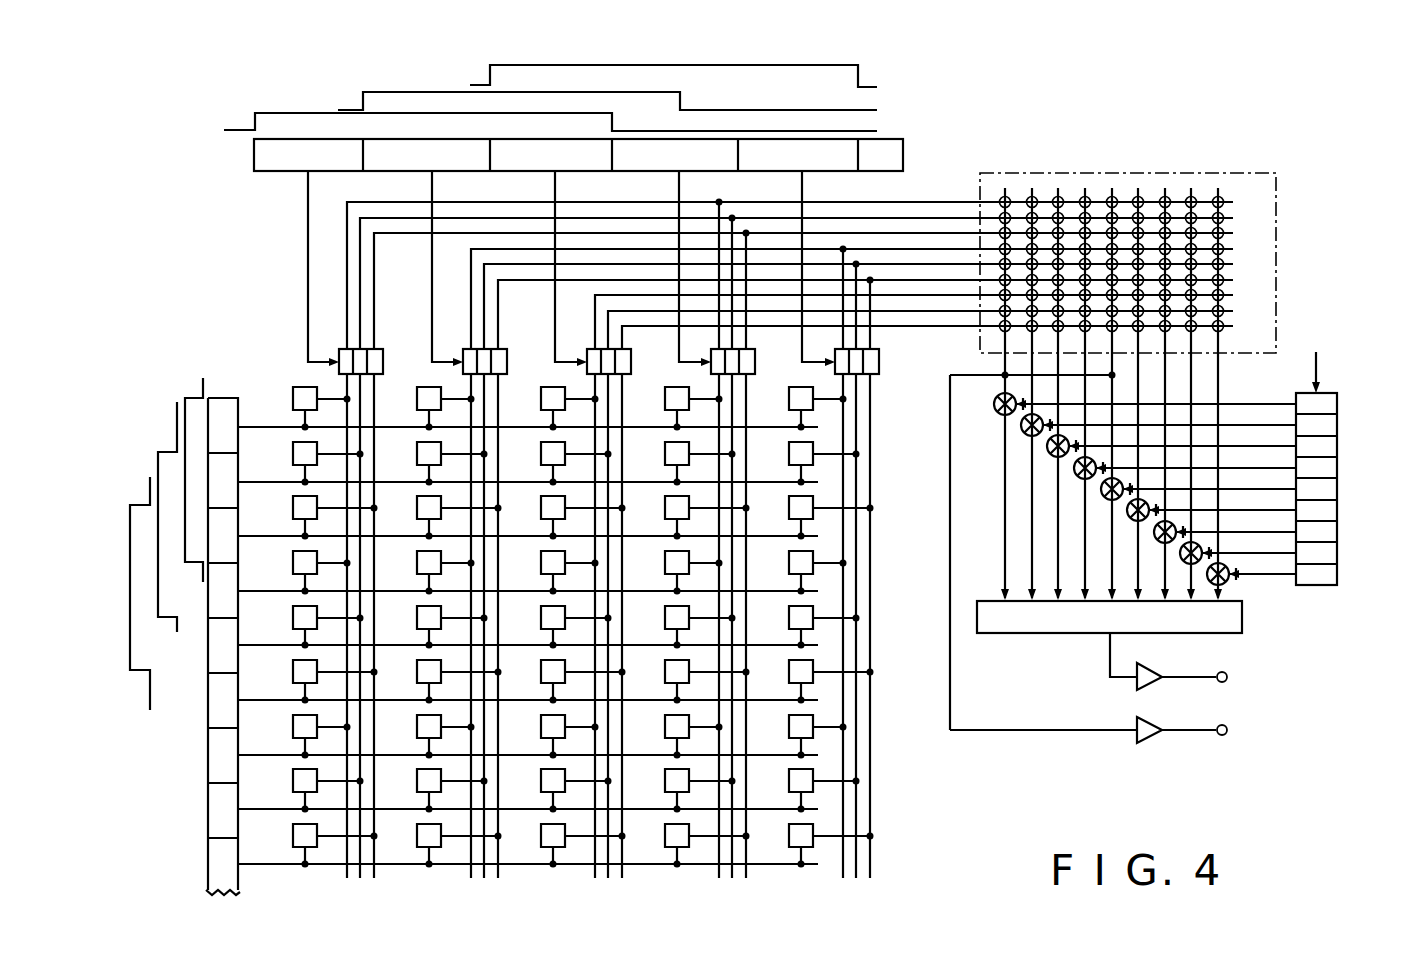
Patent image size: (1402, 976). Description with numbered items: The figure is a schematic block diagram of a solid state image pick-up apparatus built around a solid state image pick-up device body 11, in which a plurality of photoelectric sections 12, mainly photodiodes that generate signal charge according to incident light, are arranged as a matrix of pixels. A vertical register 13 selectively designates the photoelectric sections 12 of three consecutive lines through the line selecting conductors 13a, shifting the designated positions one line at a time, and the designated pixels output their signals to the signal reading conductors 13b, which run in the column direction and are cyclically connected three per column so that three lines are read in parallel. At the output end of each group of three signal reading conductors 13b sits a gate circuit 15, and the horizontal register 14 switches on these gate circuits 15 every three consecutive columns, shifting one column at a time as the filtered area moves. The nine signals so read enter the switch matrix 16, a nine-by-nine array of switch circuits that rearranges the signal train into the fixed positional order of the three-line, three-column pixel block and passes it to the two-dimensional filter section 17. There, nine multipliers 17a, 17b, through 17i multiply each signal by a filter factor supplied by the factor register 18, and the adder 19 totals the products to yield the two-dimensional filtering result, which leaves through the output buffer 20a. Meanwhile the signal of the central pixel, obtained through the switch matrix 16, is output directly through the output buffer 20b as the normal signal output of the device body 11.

The solid state image pick-up device body 11 is at (885, 805).
The photoelectric section 12 is at (559, 846).
The vertical register 13 is at (208, 787).
The line selecting conductor 13a is at (267, 424).
The signal reading conductor 13b is at (355, 878).
The horizontal register 14 is at (278, 171).
The gate circuit 15 is at (383, 352).
The switch matrix 16 is at (1276, 240).
The two-dimensional filter section 17 is at (950, 533).
The multiplier 17a is at (995, 411).
The multiplier 17b is at (1023, 436).
The multiplier 17i is at (1229, 582).
The factor register 18 is at (1337, 508).
The adder 19 is at (1235, 630).
The output buffer 20a is at (1150, 668).
The output buffer 20b is at (1152, 738).